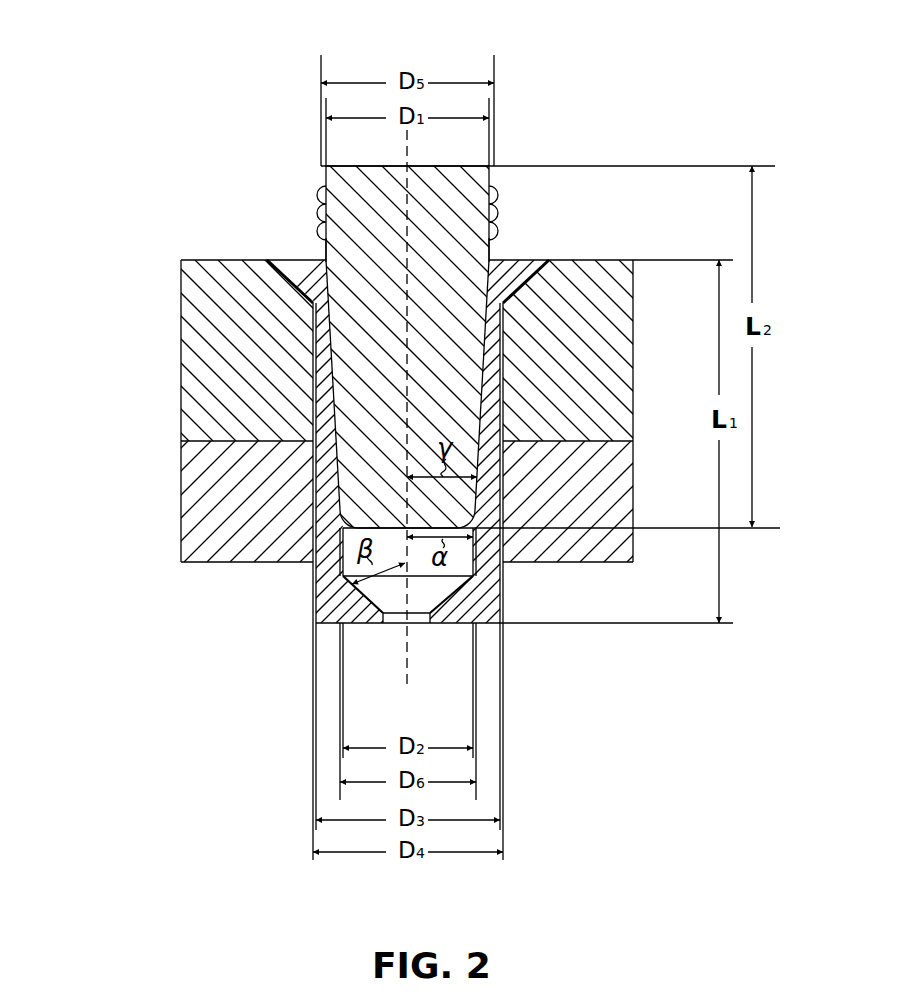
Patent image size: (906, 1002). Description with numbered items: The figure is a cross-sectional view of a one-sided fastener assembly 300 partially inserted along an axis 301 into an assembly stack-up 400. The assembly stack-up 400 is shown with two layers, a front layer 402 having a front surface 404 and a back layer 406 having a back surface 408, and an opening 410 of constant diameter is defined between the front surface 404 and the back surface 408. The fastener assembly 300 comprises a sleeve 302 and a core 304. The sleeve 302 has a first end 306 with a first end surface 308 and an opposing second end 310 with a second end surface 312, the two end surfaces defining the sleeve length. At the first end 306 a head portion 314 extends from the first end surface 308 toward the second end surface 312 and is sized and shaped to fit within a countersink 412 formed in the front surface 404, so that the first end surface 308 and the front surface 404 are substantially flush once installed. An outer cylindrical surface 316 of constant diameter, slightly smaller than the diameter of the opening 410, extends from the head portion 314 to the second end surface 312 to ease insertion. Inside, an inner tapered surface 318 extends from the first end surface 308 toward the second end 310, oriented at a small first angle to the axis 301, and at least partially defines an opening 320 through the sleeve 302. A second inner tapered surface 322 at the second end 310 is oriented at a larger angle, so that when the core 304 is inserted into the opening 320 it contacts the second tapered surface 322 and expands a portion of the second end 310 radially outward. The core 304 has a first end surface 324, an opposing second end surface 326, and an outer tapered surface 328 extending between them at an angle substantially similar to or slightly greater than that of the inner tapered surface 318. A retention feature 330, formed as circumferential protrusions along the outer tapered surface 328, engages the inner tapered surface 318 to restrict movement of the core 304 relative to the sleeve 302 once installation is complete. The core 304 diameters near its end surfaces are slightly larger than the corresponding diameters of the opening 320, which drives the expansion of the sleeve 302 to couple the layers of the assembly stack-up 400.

The fastener assembly 300 is at (227, 82).
The axis 301 is at (406, 665).
The sleeve 302 is at (496, 258).
The core 304 is at (455, 178).
The first end 306 is at (272, 284).
The first end surface 308 is at (525, 267).
The second end 310 is at (273, 690).
The second end surface 312 is at (458, 623).
The head portion 314 is at (293, 268).
The outer cylindrical surface 316 is at (498, 387).
The inner tapered surface 318 is at (317, 603).
The opening 320 is at (323, 257).
The second inner tapered surface 322 is at (445, 600).
The first end surface 324 is at (363, 167).
The second end surface 326 is at (340, 543).
The outer tapered surface 328 is at (320, 182).
The retention feature 330 is at (499, 190).
The assembly stack-up 400 is at (122, 208).
The front layer 402 is at (196, 366).
The front surface 404 is at (210, 260).
The back layer 406 is at (185, 485).
The back surface 408 is at (200, 562).
The opening 410 is at (312, 543).
The countersink 412 is at (528, 283).